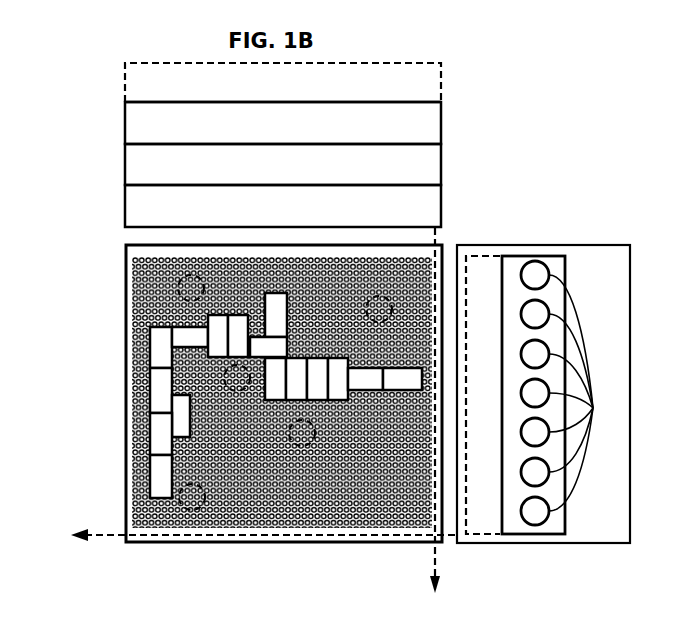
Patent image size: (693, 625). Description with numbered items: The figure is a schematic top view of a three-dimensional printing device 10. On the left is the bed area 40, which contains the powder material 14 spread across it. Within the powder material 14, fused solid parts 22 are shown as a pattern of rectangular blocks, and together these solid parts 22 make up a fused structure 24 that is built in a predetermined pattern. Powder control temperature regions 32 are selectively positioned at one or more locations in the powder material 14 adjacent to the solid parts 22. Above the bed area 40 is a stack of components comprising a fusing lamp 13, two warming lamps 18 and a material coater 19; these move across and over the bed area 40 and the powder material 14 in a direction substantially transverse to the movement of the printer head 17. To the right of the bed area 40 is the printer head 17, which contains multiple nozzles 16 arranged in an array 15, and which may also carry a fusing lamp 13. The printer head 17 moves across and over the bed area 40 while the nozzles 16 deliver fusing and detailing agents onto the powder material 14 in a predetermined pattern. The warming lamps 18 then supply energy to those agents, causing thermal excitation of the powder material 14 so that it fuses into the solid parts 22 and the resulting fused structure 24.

The 3D printing device 10 is at (588, 125).
The fusing lamps 13 is at (272, 98).
The powder material 14 is at (130, 320).
The array 15 is at (531, 535).
The nozzles 16 is at (570, 393).
The printer head 17 is at (573, 244).
The warming lamps 18 is at (272, 138).
The material coater 19 is at (272, 179).
The solid parts 22 is at (160, 347).
The fused structure 24 is at (141, 486).
The powder control temperature regions 32 is at (195, 280).
The bed area 40 is at (125, 382).